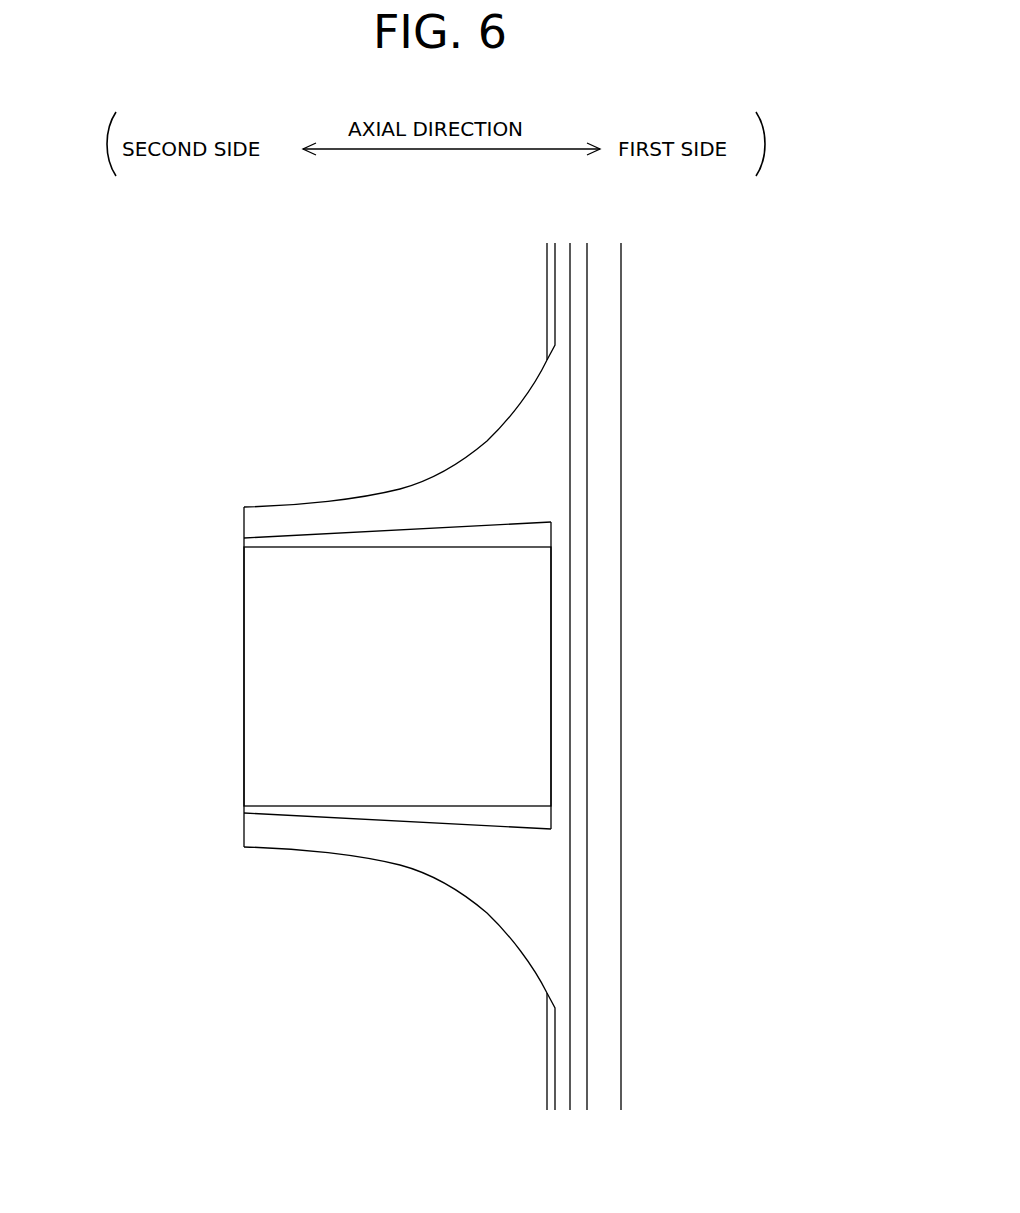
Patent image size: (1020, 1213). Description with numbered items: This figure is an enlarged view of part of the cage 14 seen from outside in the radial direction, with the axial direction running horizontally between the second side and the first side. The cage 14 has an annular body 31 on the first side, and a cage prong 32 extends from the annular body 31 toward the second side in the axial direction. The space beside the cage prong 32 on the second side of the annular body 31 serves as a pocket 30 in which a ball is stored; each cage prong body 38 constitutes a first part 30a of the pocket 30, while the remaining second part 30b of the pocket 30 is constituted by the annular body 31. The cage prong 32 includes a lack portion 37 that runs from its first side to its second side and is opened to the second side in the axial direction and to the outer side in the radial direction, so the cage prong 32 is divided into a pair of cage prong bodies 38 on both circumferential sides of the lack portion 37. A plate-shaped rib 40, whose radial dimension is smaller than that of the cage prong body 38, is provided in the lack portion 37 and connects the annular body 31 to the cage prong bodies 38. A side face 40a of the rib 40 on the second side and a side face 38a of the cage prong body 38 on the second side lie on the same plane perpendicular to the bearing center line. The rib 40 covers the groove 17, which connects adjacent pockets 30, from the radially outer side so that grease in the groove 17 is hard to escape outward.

The cage 14 is at (623, 346).
The groove 17 is at (454, 722).
The pocket 30 is at (343, 676).
The first part of the pocket 30a is at (387, 490).
The second part of the pocket 30b is at (546, 290).
The annular body 31 is at (622, 1063).
The cage prong 32 is at (243, 849).
The lack portion 37 is at (454, 620).
The cage prong body 38 is at (277, 520).
The side face of the cage prong body 38a is at (243, 526).
The rib 40 is at (282, 660).
The side face of the rib 40a is at (243, 760).